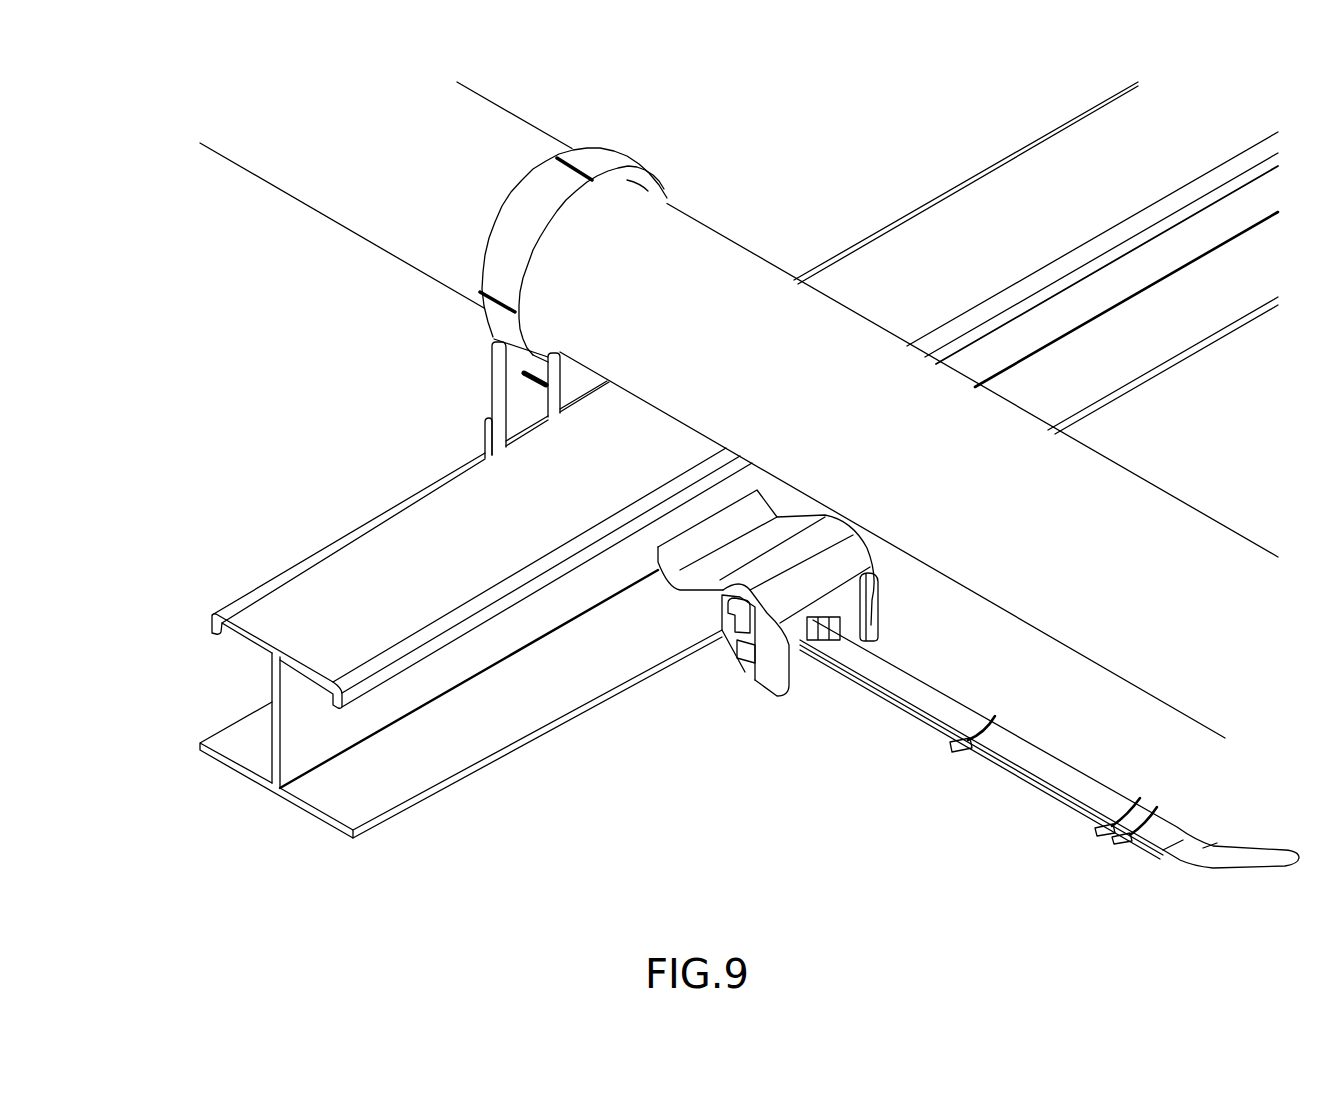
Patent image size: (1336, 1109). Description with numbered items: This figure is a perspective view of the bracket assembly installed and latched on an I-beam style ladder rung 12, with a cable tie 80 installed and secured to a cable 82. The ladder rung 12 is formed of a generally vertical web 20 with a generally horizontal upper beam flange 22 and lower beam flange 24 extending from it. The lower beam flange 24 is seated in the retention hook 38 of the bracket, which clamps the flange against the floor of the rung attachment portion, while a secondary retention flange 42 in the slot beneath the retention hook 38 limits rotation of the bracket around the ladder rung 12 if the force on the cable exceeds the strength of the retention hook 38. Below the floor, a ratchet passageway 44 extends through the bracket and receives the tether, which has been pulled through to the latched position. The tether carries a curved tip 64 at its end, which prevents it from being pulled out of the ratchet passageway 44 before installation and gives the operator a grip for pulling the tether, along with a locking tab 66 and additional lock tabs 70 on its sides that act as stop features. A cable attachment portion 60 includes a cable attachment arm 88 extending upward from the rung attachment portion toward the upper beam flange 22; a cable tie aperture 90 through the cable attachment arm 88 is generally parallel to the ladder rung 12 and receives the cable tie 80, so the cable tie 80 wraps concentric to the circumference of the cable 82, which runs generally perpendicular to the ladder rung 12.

The ladder rung 12 is at (962, 179).
The vertical web 20 is at (270, 730).
The upper beam flange 22 is at (262, 637).
The lower beam flange 24 is at (308, 813).
The retention hook 38 is at (830, 547).
The secondary retention flange 42 is at (725, 628).
The ratchet passageway 44 is at (877, 637).
The cable attachment portion 60 is at (497, 440).
The curved tip 64 is at (1226, 867).
The locking tab 66 is at (957, 748).
The additional lock tabs 70 is at (1120, 840).
The cable tie 80 is at (607, 158).
The cable 82 is at (695, 238).
The cable attachment arm 88 is at (492, 393).
The cable tie aperture 90 is at (540, 373).